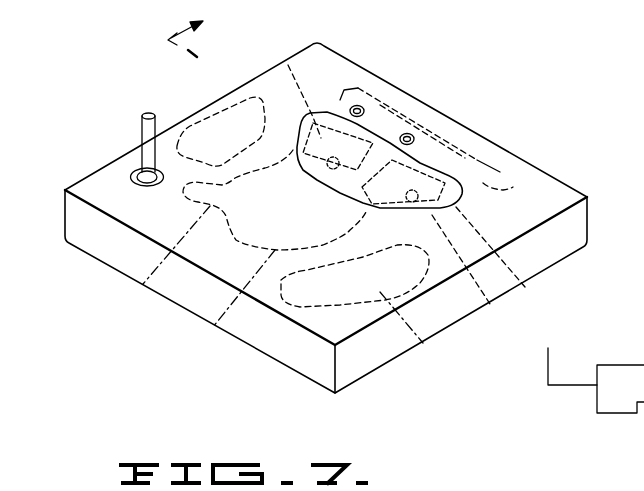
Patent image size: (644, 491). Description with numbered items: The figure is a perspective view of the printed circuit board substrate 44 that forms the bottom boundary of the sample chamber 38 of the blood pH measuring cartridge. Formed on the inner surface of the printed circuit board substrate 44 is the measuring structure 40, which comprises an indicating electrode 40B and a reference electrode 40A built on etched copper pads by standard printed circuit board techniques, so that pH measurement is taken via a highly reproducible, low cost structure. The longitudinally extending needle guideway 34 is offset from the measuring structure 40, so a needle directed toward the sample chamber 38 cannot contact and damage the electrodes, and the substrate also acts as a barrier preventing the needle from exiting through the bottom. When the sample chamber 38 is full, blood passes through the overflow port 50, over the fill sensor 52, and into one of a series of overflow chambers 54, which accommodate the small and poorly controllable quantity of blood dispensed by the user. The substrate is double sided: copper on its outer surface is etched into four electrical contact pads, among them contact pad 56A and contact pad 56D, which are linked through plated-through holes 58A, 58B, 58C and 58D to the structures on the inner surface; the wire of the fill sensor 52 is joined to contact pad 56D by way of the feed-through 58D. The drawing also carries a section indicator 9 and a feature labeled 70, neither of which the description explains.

The section line 9- 9 is at (194, 29).
The needle guideway 34 is at (213, 325).
The sample chamber 38 is at (515, 186).
The measuring structure 40 is at (375, 134).
The reference electrode 40A is at (643, 287).
The indicating electrode 40B is at (288, 65).
The printed circuit board substrate 44 is at (330, 55).
The overflow port 50 is at (143, 282).
The fill sensor 52 is at (138, 150).
The overflow chambers 54 is at (222, 113).
The electrical contact pad 56A is at (601, 482).
The electrical contact pad 56D is at (615, 408).
The plated-through hole 58A is at (480, 273).
The plated-through hole 58B is at (410, 134).
The plated-through hole 58C is at (360, 105).
The plated-through hole 58D is at (133, 175).
The recess outline 70 is at (443, 173).